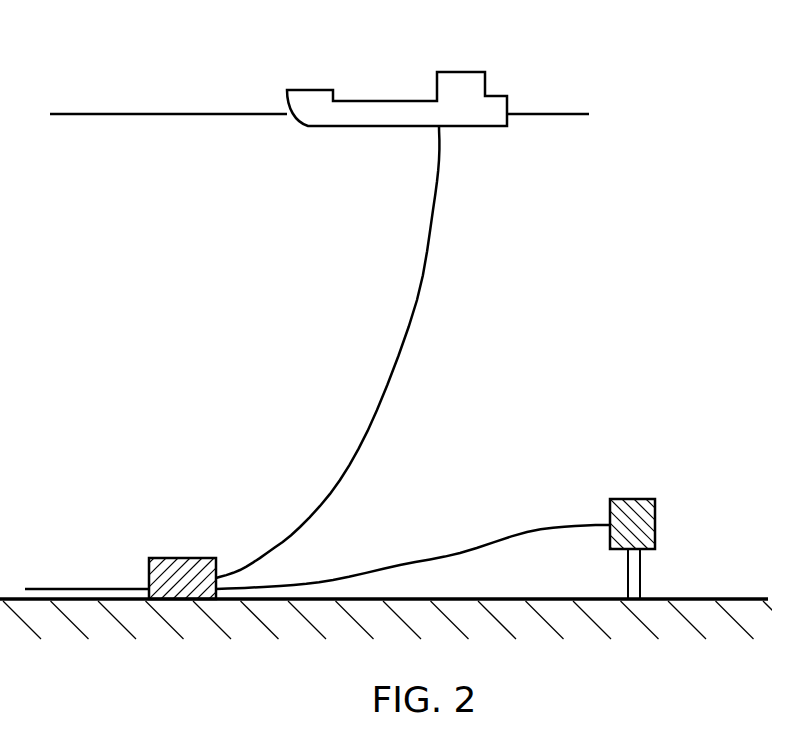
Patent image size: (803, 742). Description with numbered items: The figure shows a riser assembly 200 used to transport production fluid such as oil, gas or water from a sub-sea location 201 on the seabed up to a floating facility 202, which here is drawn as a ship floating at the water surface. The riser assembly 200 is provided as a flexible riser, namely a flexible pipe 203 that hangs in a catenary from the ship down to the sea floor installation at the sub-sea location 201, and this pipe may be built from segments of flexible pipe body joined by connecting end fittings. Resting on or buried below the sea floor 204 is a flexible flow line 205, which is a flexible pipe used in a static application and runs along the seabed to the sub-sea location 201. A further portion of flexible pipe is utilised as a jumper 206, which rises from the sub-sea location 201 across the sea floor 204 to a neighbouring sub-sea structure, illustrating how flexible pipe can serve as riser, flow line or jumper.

The riser assembly 200 is at (468, 216).
The sub-sea location 201 is at (183, 558).
The floating facility 202 is at (310, 90).
The flexible pipe 203 is at (377, 410).
The sea floor 204 is at (707, 598).
The flow line 205 is at (93, 589).
The jumper 206 is at (540, 528).